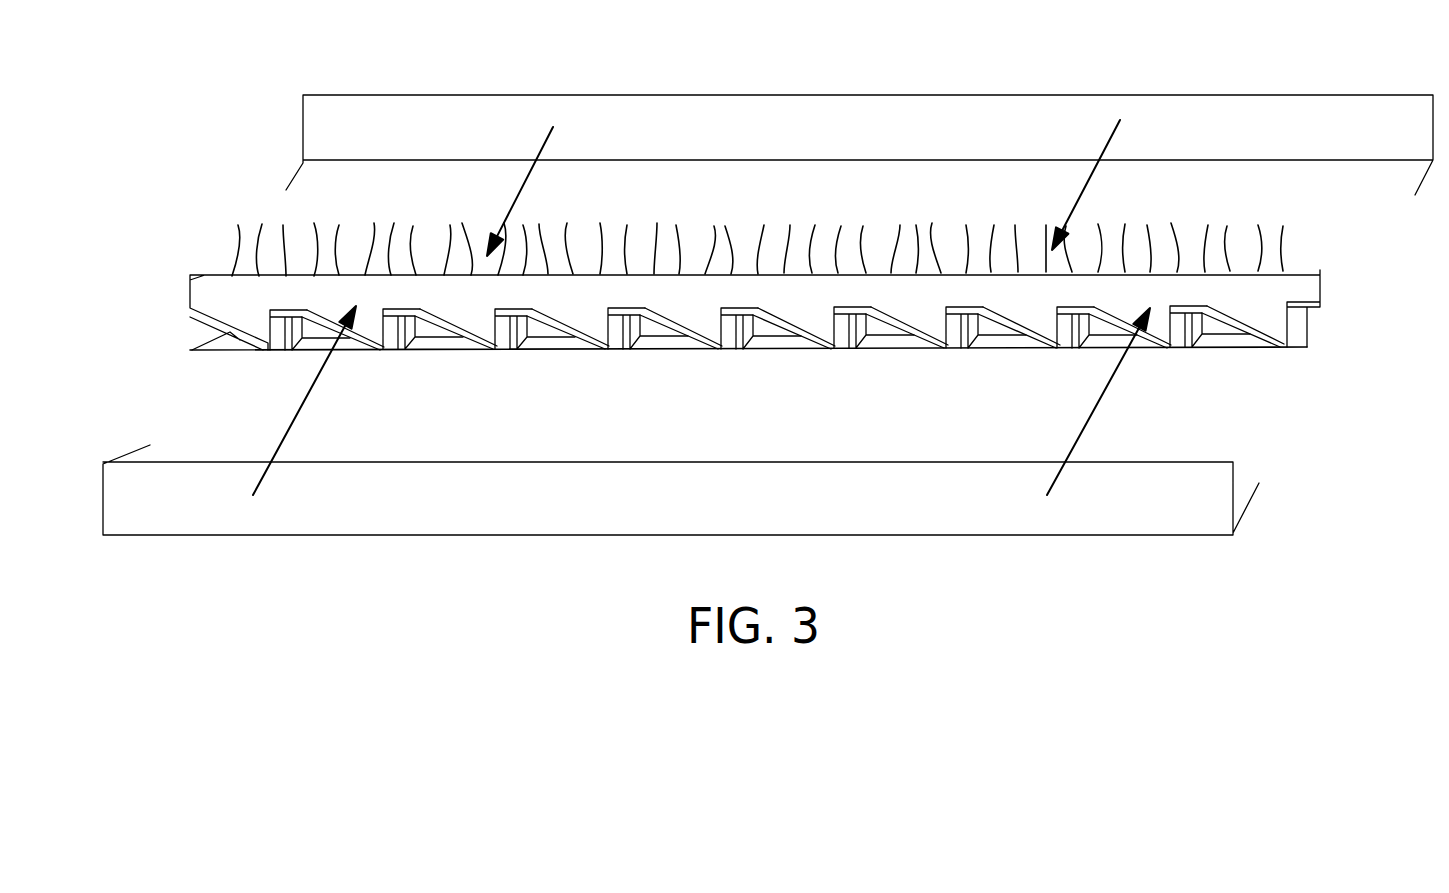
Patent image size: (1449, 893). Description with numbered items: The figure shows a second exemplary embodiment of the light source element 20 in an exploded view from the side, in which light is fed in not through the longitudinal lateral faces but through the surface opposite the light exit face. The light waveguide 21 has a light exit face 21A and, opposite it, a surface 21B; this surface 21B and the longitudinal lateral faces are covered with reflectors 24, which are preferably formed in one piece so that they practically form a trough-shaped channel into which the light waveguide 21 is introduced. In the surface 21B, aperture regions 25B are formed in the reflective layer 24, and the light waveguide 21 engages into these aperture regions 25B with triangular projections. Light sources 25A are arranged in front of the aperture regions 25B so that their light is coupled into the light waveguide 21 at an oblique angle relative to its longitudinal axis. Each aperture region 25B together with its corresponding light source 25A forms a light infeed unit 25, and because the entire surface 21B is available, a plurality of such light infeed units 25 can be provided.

The light source element 20 is at (1199, 55).
The reflectors 24 is at (765, 125).
The light waveguide 21 is at (1305, 288).
The light exit face 21A is at (694, 267).
The surface lying opposite the light exit face 21B is at (693, 350).
The light infeed units 25 is at (745, 372).
The light sources 25A is at (505, 350).
The aperture regions 25B is at (410, 350).